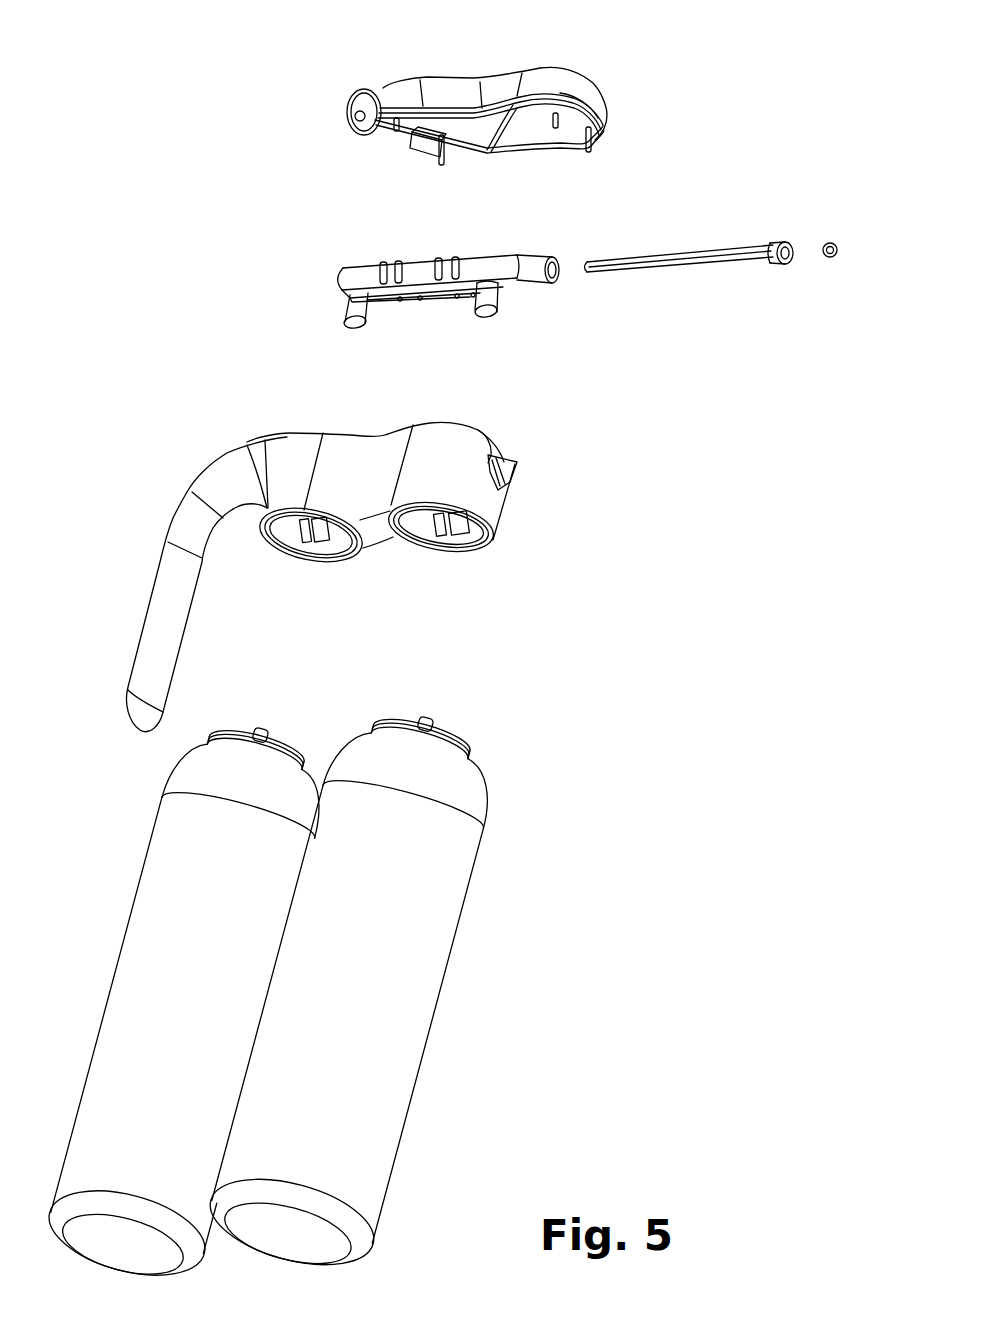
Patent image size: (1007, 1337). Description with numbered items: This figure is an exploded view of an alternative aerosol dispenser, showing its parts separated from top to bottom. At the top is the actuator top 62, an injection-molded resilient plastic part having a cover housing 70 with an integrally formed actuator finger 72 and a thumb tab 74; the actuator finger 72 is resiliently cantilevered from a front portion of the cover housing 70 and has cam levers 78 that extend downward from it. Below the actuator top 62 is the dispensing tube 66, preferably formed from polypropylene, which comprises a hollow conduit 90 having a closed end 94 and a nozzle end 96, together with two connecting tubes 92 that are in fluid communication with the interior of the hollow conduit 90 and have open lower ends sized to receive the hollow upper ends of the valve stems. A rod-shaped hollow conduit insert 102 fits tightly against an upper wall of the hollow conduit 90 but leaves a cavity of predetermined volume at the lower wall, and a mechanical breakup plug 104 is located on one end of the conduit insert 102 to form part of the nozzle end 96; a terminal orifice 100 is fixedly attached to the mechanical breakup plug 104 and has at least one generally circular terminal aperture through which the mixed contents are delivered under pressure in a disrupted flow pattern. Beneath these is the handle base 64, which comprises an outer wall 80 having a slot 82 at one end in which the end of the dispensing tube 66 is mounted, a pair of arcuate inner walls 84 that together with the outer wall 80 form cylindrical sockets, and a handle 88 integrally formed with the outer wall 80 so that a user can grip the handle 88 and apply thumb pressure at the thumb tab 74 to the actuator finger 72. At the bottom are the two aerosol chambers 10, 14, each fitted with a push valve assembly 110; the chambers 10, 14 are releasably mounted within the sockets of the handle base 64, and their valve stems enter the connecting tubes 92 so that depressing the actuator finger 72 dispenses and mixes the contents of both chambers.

The chamber 10 is at (167, 838).
The chamber 14 is at (443, 908).
The actuator top 62 is at (575, 68).
The handle base 64 is at (488, 512).
The dispensing tube 66 is at (338, 266).
The cover housing 70 is at (592, 100).
The actuator finger 72 is at (378, 92).
The thumb tab 74 is at (350, 115).
The cam levers 78 is at (500, 143).
The outer wall 80 is at (485, 498).
The slot 82 is at (498, 458).
The arcuate inner walls 84 is at (360, 530).
The handle 88 is at (178, 580).
The hollow conduit 90 is at (552, 268).
The connecting tubes 92 is at (357, 307).
The closed end 94 is at (337, 283).
The nozzle end 96 is at (550, 280).
The terminal orifice 100 is at (831, 246).
The hollow conduit insert 102 is at (735, 250).
The mechanical breakup plug 104 is at (778, 242).
The push valve assembly 110 is at (271, 732).